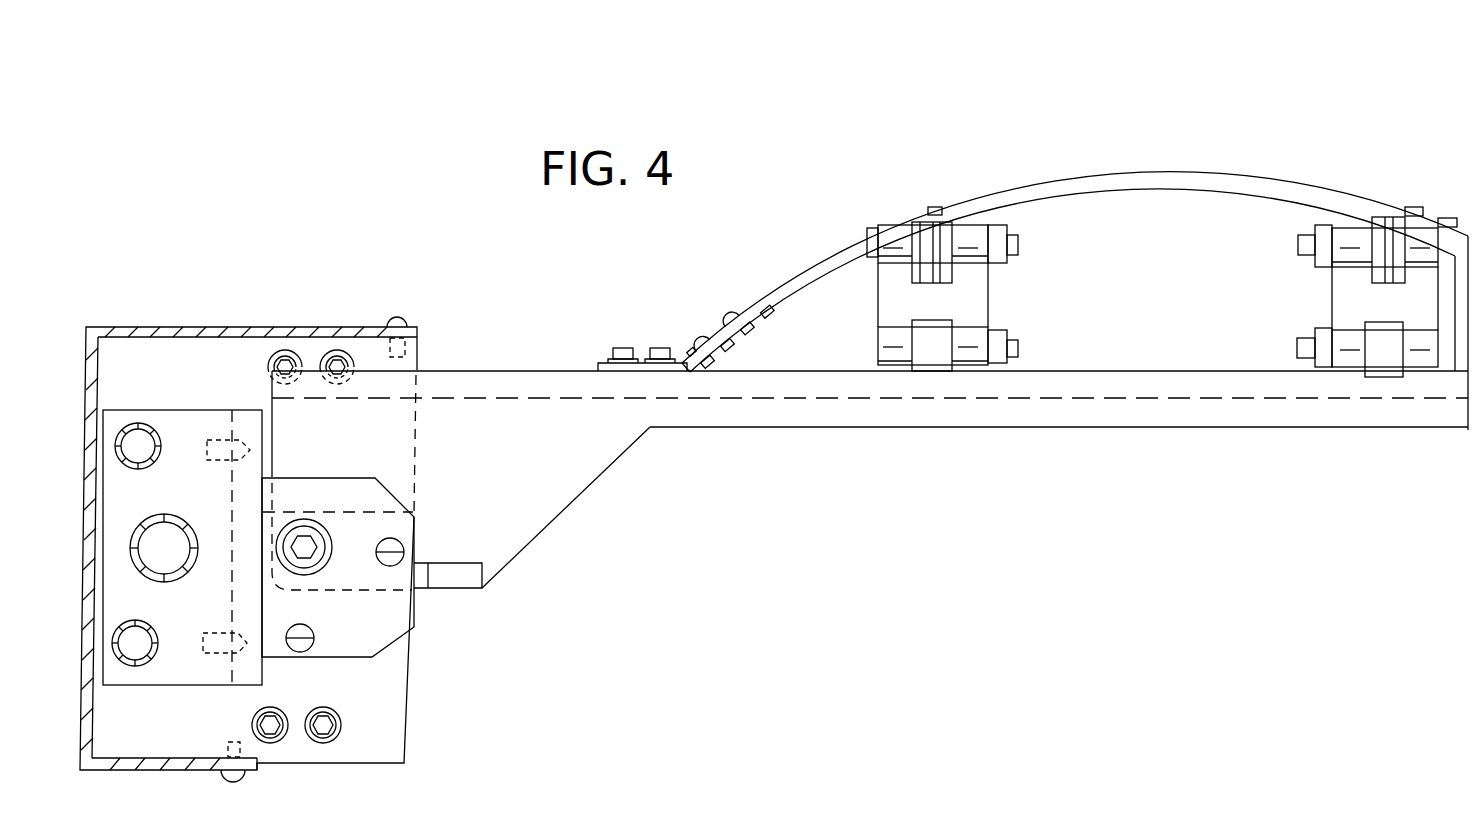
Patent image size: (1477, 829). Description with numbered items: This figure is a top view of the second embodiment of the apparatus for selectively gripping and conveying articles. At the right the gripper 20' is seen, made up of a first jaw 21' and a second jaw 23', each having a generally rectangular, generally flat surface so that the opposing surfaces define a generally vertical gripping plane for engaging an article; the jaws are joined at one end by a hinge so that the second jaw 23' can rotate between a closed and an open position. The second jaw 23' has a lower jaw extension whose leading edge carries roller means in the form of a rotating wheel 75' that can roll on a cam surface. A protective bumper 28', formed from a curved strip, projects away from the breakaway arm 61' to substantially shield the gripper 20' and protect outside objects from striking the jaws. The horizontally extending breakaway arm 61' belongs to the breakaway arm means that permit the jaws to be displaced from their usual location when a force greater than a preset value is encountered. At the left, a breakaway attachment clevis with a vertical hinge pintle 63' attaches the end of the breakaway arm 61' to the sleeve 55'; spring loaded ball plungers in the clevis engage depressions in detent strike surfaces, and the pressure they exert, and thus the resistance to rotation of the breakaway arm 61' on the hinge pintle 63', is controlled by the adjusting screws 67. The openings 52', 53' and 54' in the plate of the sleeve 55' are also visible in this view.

The gripper 20' is at (712, 447).
The first jaw 21' is at (910, 317).
The second jaw 23' is at (942, 211).
The protective bumper 28' is at (1075, 236).
The rotating wheel 75' is at (953, 216).
The breakaway arm 61' is at (865, 413).
The sleeve 55' is at (182, 511).
The central aperture 52' is at (169, 519).
The upper aperture 53' is at (143, 414).
The lower aperture 54' is at (166, 625).
The vertical hinge pintle 63' is at (338, 548).
The adjusting screws 67 is at (392, 537).